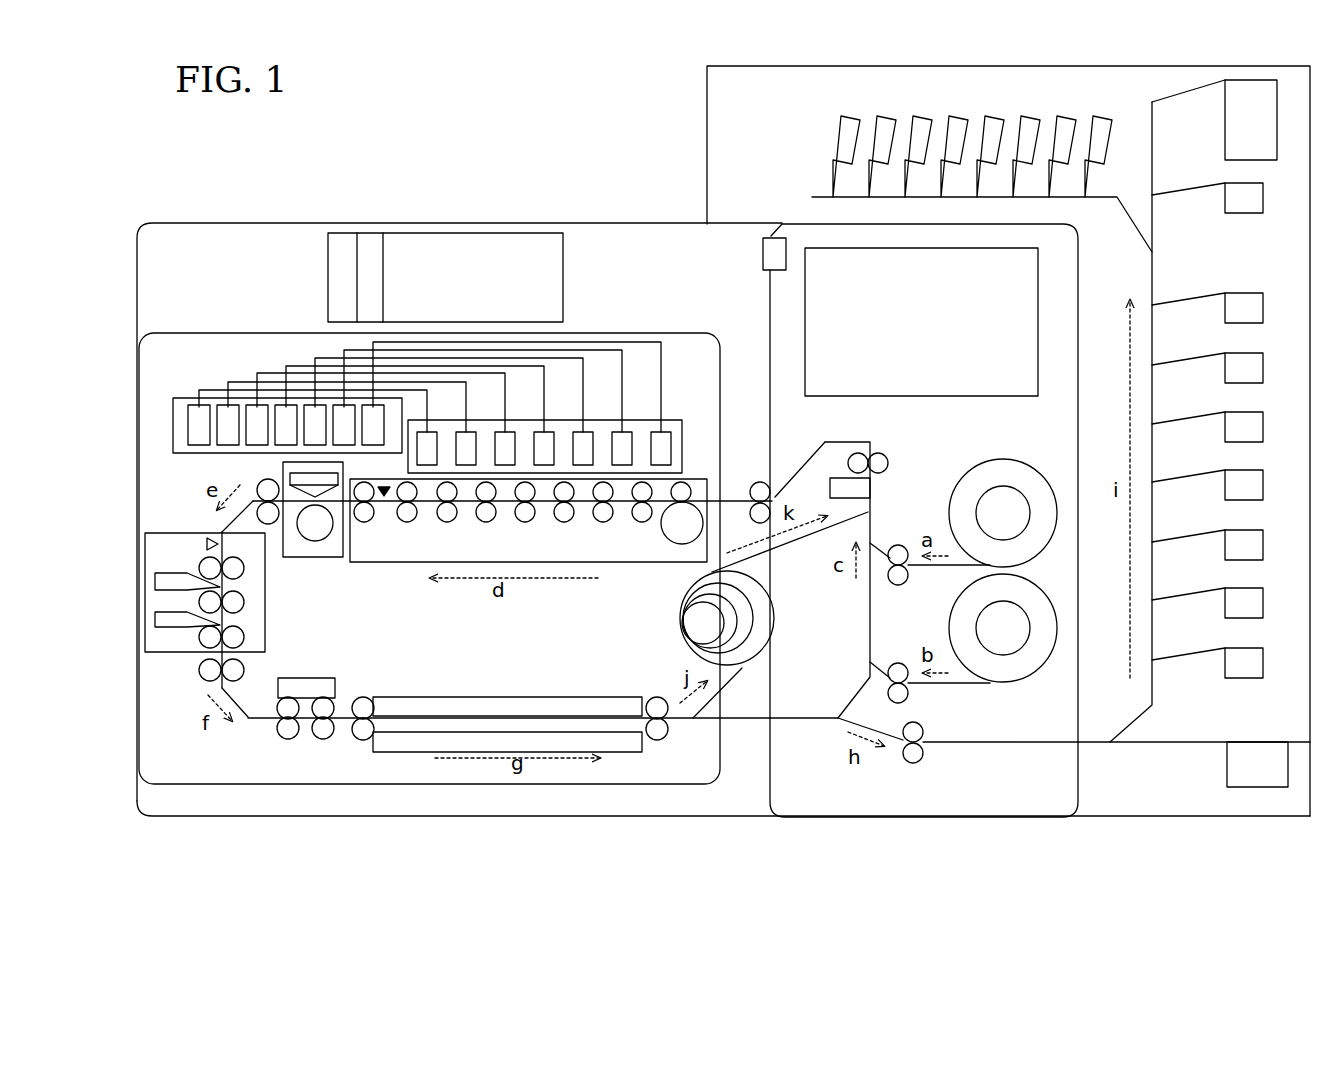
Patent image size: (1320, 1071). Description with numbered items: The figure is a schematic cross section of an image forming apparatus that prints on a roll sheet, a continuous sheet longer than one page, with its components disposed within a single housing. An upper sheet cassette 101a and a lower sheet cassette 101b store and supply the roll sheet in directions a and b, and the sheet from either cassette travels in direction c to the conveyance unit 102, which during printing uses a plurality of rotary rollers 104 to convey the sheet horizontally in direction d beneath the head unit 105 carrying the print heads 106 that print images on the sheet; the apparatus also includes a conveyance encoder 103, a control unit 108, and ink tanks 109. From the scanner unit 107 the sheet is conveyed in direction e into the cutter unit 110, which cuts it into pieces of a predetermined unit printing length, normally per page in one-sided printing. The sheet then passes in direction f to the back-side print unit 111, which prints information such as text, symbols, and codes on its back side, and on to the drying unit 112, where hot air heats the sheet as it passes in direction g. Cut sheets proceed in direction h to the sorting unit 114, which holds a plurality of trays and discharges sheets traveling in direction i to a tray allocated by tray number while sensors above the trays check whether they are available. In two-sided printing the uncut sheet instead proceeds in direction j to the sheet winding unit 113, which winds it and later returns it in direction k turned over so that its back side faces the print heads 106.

The upper sheet cassette 101a is at (966, 492).
The lower sheet cassette 101b is at (957, 632).
The conveyance unit 102 is at (382, 564).
The conveyance encoder 103 is at (680, 538).
The rotary rollers 104 is at (447, 522).
The head unit 105 is at (679, 417).
The print heads 106 is at (427, 450).
The scanner unit 107 is at (318, 560).
The control unit 108 is at (327, 275).
The ink tanks 109 is at (373, 425).
The cutter unit 110 is at (172, 655).
The back-side print unit 111 is at (335, 678).
The drying unit 112 is at (473, 697).
The sheet winding unit 113 is at (683, 643).
The sorting unit 114 is at (707, 135).